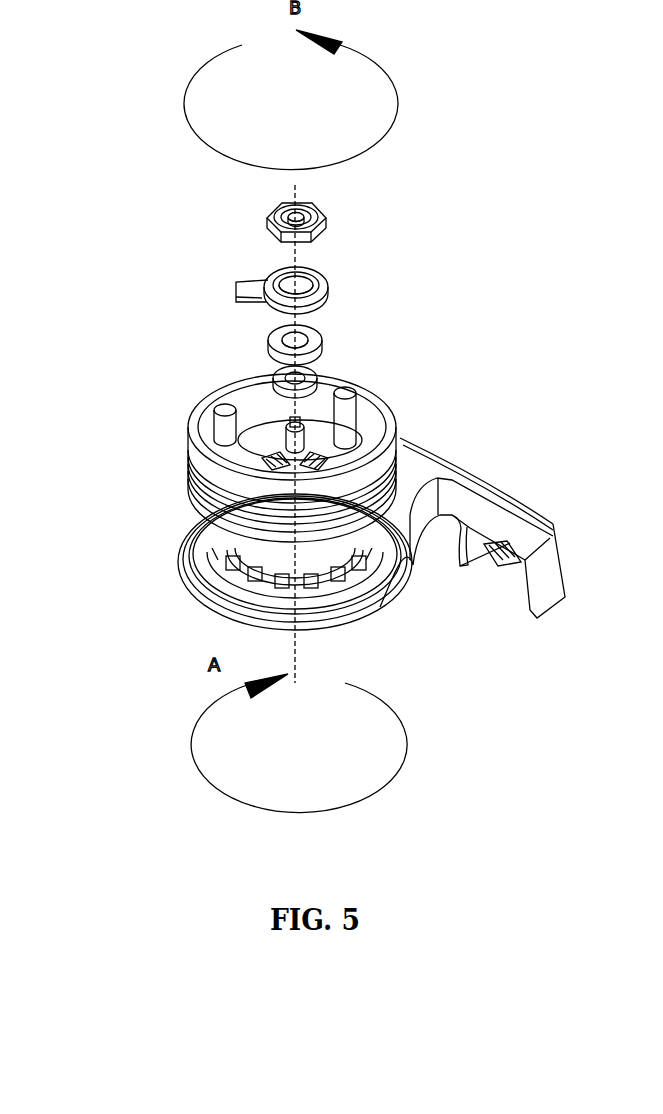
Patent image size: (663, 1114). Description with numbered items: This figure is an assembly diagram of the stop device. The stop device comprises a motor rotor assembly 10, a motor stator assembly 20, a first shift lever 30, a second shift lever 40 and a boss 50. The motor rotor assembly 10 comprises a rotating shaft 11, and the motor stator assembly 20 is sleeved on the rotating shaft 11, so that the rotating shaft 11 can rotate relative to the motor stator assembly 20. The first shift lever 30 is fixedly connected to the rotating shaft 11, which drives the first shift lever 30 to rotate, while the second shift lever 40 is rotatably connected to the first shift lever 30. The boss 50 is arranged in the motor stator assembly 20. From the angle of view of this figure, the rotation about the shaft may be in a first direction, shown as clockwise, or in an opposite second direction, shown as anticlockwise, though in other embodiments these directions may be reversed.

The motor rotor assembly 10 is at (230, 594).
The rotating shaft 11 is at (280, 460).
The motor stator assembly 20 is at (372, 470).
The first shift lever 30 is at (288, 392).
The second shift lever 40 is at (328, 287).
The boss 50 is at (232, 448).